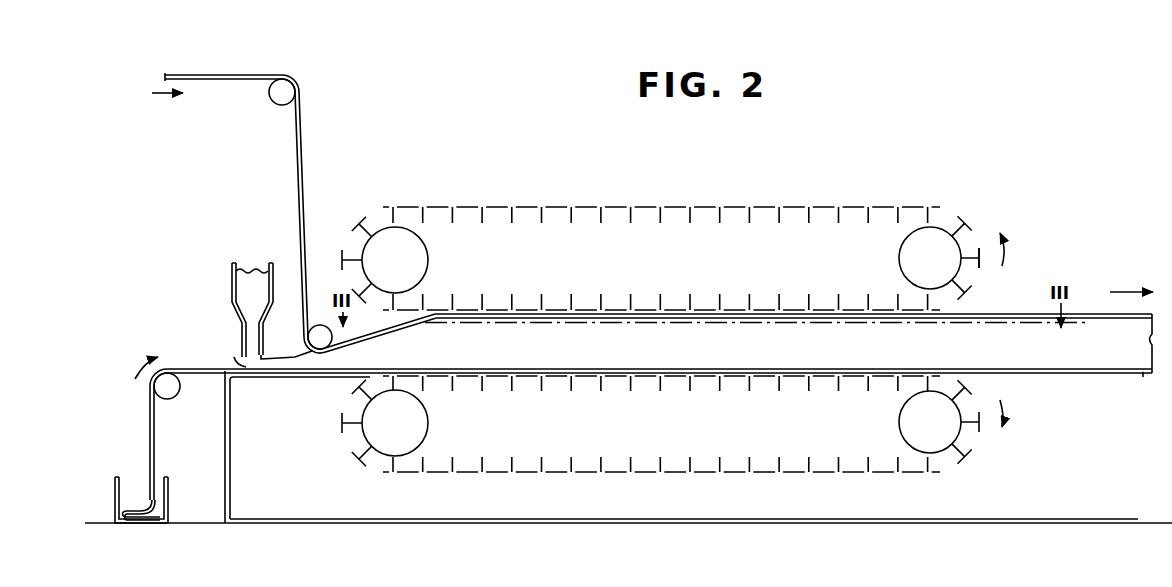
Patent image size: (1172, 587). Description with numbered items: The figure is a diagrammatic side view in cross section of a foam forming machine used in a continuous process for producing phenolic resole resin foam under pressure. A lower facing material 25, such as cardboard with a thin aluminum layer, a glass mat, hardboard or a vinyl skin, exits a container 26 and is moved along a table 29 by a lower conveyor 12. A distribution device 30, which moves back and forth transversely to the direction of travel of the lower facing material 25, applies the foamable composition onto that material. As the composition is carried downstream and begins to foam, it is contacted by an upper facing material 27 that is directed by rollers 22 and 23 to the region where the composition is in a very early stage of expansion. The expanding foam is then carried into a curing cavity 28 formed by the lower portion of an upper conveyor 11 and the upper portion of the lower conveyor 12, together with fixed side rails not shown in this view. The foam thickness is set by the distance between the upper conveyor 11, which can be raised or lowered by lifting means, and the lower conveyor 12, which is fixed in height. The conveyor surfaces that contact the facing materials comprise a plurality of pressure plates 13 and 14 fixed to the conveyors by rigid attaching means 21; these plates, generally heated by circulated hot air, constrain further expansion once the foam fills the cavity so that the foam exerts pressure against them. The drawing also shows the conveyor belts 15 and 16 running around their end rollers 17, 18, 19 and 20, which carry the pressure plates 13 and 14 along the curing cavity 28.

The upper conveyor 11 is at (1016, 217).
The lower conveyor 12 is at (1018, 450).
The pressure plates 13 is at (963, 213).
The pressure plates 14 is at (962, 459).
The upper endless belt 15 is at (558, 293).
The lower endless belt 16 is at (790, 456).
The upper belt roller 17 is at (428, 260).
The upper belt roller 18 is at (899, 262).
The lower belt roller 19 is at (428, 423).
The lower belt roller 20 is at (899, 422).
The rigid attaching means 21 is at (977, 263).
The roller 22 is at (318, 325).
The roller 23 is at (272, 103).
The lower facing material 25 is at (150, 425).
The container 26 is at (115, 495).
The upper facing material 27 is at (232, 75).
The curing cavity 28 is at (918, 349).
The table 29 is at (225, 452).
The distribution device 30 is at (232, 272).